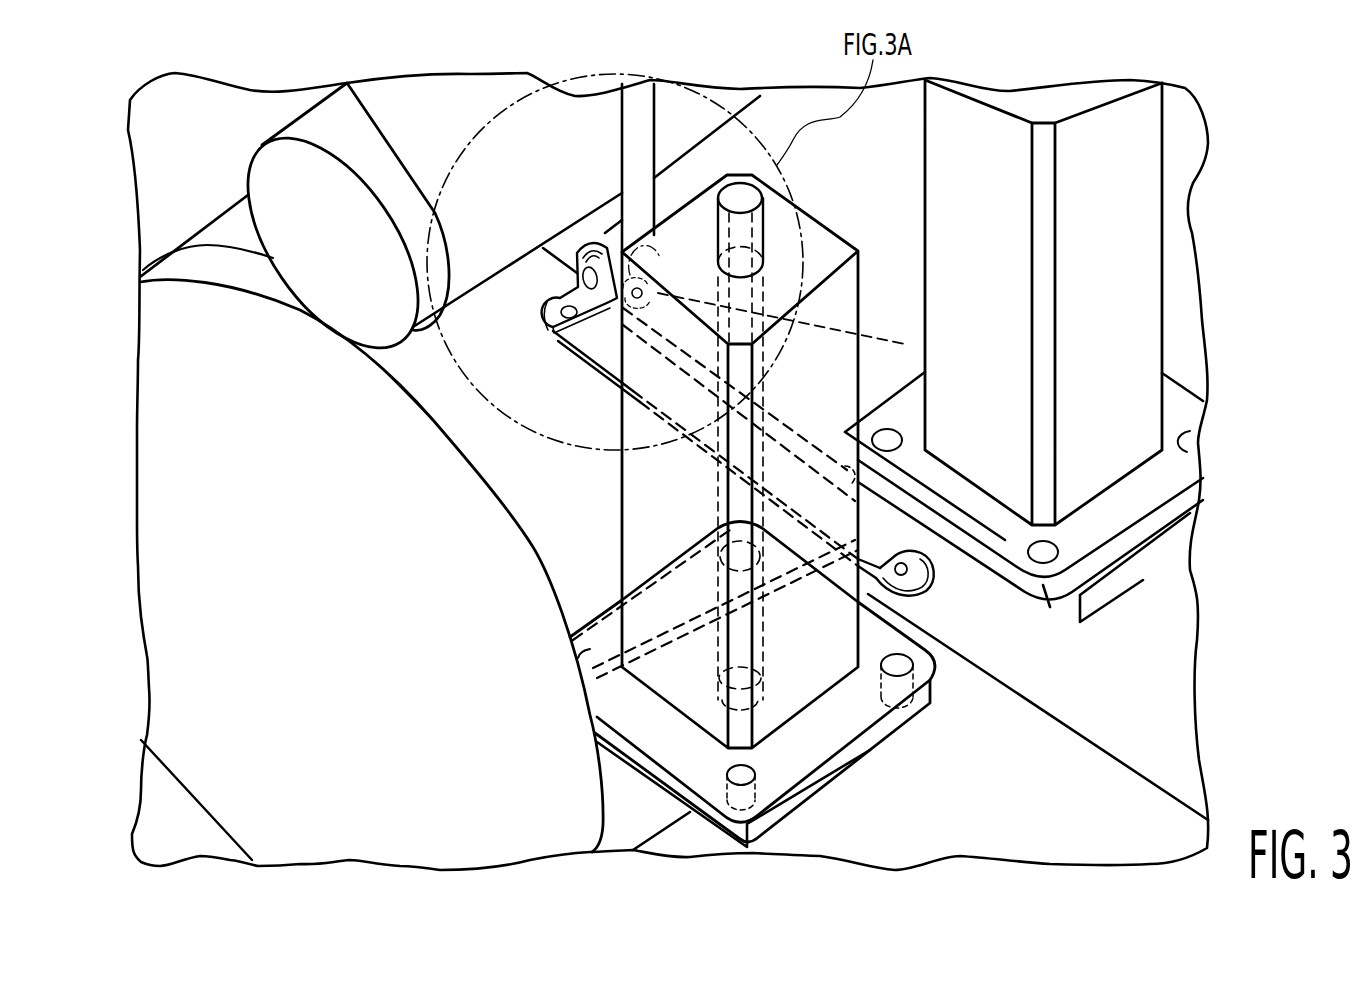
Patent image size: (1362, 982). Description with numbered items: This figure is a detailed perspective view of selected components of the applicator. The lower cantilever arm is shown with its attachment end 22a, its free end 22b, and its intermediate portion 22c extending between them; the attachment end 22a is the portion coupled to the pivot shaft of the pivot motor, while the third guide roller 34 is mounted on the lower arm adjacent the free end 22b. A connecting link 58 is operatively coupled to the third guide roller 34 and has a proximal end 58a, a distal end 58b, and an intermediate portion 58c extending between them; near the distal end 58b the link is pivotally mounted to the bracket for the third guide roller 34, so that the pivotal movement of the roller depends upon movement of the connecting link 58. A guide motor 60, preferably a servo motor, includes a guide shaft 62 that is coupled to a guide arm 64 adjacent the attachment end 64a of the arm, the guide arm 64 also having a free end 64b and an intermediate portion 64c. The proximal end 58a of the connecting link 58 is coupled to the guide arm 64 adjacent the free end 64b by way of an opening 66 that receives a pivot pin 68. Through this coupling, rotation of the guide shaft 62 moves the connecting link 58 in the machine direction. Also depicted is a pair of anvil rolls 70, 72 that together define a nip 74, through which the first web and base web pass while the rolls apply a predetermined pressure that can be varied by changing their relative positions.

The attachment end 22a is at (1115, 600).
The free end 22b is at (689, 298).
The intermediate portion 22c is at (885, 355).
The third guide roller 34 is at (528, 287).
The connecting link 58 is at (888, 540).
The proximal end 58a is at (850, 522).
The distal end 58b is at (550, 342).
The intermediate portion 58c is at (690, 410).
The guide motor 60 is at (612, 537).
The guide shaft 62 is at (717, 473).
The guide arm 64 is at (828, 794).
The attachment end 64a is at (650, 783).
The free end 64b is at (860, 553).
The intermediate portion 64c is at (837, 753).
The opening 66 is at (922, 574).
The pivot pin 68 is at (917, 565).
The anvil roll 70 is at (287, 180).
The anvil roll 72 is at (173, 337).
The nip 74 is at (412, 355).